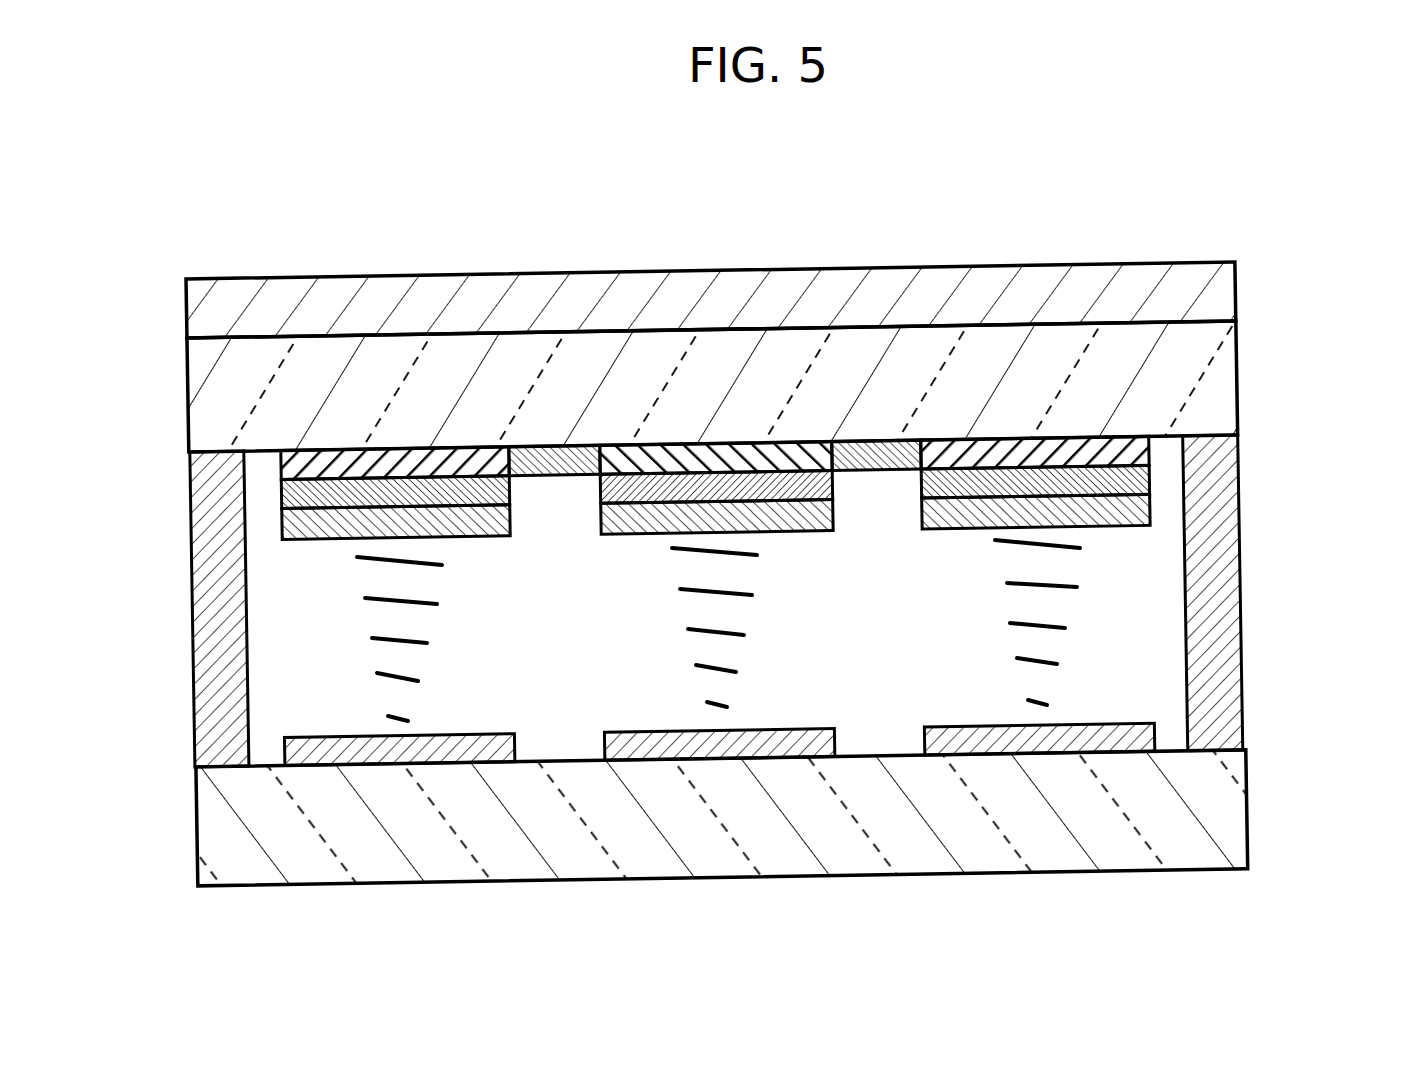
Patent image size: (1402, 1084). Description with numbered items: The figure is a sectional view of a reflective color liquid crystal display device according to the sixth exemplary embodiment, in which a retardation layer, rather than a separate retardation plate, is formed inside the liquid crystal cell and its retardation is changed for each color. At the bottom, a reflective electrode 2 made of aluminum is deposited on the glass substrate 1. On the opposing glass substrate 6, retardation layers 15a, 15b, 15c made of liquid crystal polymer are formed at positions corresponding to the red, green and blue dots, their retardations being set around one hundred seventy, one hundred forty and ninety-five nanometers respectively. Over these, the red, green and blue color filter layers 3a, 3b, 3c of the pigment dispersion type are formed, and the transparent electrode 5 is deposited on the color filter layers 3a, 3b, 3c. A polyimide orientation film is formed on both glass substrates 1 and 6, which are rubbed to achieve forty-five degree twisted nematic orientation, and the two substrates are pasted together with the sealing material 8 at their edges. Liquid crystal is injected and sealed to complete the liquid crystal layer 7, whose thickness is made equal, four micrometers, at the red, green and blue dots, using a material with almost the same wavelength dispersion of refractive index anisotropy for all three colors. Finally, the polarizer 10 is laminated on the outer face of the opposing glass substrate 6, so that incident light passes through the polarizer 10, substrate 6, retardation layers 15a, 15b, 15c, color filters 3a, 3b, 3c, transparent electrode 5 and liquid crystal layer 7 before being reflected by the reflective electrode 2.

The glass substrate 1 is at (1207, 830).
The reflective electrode 2 is at (1155, 733).
The red color filter layer 3a is at (418, 488).
The green color filter layer 3b is at (740, 488).
The blue color filter layer 3c is at (1064, 457).
The transparent electrode 5 is at (1152, 505).
The opposing glass substrate 6 is at (1220, 372).
The liquid crystal layer 7 is at (1135, 595).
The sealing material 8 is at (220, 597).
The polarizer 10 is at (1222, 285).
The retardation layer 15a is at (350, 456).
The retardation layer 15b is at (668, 452).
The retardation layer 15c is at (952, 455).